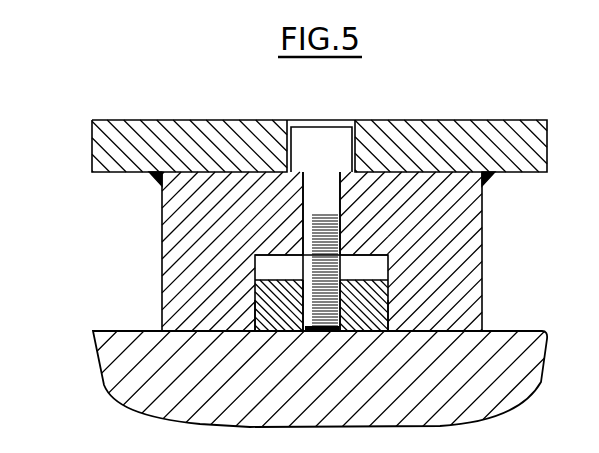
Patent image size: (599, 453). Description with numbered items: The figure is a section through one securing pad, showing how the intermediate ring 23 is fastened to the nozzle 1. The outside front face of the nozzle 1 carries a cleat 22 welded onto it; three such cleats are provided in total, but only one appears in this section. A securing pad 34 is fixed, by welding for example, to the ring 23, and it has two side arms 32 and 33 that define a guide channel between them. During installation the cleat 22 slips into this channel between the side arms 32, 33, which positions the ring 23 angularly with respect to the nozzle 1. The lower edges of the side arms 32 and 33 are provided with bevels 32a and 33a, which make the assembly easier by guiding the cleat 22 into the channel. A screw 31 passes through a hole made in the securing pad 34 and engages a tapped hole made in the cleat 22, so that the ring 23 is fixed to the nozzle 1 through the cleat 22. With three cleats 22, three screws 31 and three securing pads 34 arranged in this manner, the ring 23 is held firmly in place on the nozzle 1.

The nozzle 1 is at (485, 373).
The cleat 22 is at (401, 284).
The intermediate ring 23 is at (172, 147).
The screw 31 is at (307, 148).
The side arm 32 is at (206, 298).
The bevel 32a is at (246, 326).
The side arm 33 is at (434, 296).
The bevel 33a is at (401, 326).
The securing pad 34 is at (198, 243).